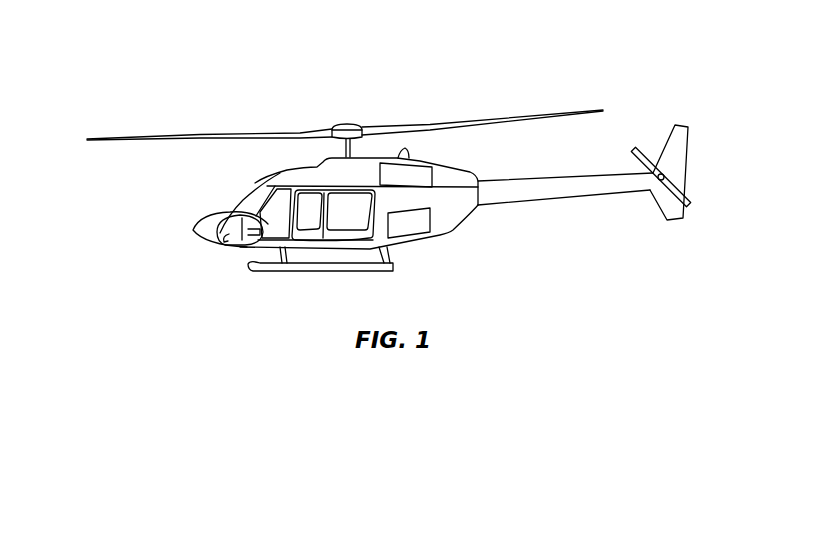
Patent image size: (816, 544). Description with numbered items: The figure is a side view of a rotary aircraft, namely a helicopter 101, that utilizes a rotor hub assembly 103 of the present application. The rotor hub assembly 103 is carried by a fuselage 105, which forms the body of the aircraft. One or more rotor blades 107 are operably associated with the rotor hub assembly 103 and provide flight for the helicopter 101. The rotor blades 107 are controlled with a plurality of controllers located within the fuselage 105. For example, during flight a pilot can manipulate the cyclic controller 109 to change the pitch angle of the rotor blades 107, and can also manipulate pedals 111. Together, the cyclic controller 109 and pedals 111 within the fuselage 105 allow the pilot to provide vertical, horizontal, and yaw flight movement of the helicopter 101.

The helicopter 101 is at (153, 62).
The rotor hub assembly 103 is at (313, 106).
The fuselage 105 is at (270, 188).
The rotor blade 107 is at (437, 123).
The cyclic controller 109 is at (242, 230).
The pedals 111 is at (222, 240).